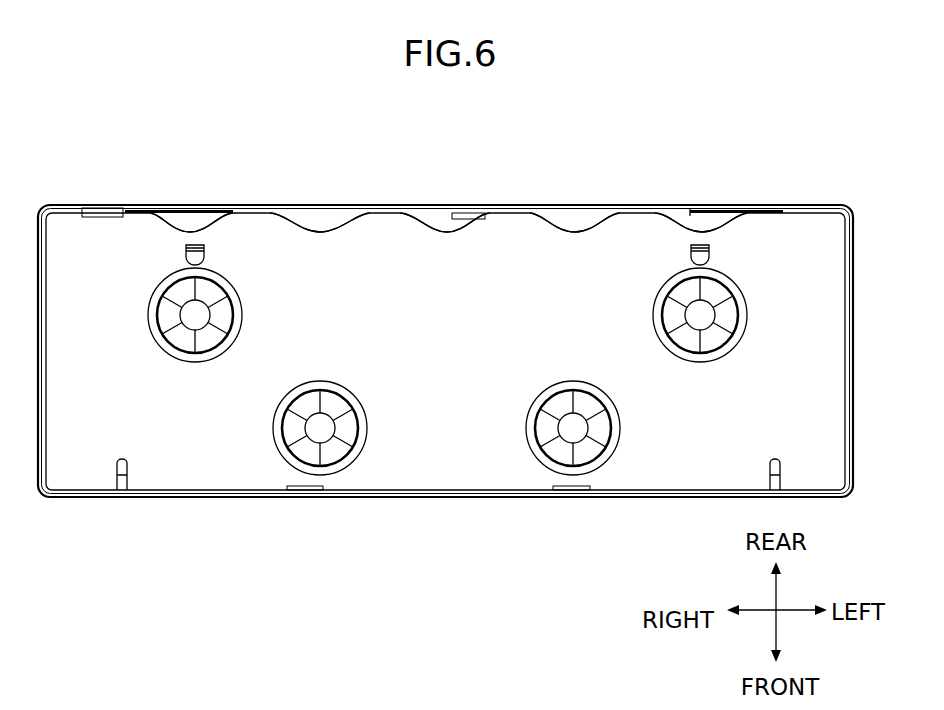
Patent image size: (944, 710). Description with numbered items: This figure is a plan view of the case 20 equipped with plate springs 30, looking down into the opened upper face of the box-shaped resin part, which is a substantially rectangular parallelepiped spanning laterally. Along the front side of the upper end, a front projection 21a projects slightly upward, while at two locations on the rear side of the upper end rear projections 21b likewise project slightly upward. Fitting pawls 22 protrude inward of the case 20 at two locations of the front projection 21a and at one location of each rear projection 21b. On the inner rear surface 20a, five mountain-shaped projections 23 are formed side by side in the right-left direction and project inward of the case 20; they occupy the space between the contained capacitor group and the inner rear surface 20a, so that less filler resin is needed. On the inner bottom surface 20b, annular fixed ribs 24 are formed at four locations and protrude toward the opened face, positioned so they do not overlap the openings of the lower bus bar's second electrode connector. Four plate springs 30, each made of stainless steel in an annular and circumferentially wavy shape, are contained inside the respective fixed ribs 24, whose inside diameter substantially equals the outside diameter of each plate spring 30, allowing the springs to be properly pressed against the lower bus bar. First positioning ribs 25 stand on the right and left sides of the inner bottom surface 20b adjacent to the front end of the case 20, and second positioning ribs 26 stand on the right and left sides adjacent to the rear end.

The case 20 is at (542, 200).
The inner rear surface 20a is at (796, 215).
The inner bottom surface 20b is at (316, 323).
The front projection 21a is at (448, 497).
The rear projections 21b is at (100, 208).
The fitting pawls 22 is at (103, 218).
The mountain-shaped projections 23 is at (175, 226).
The annular fixed ribs 24 is at (162, 348).
The first positioning ribs 25 is at (117, 478).
The second positioning ribs 26 is at (204, 256).
The plate springs 30 is at (222, 330).